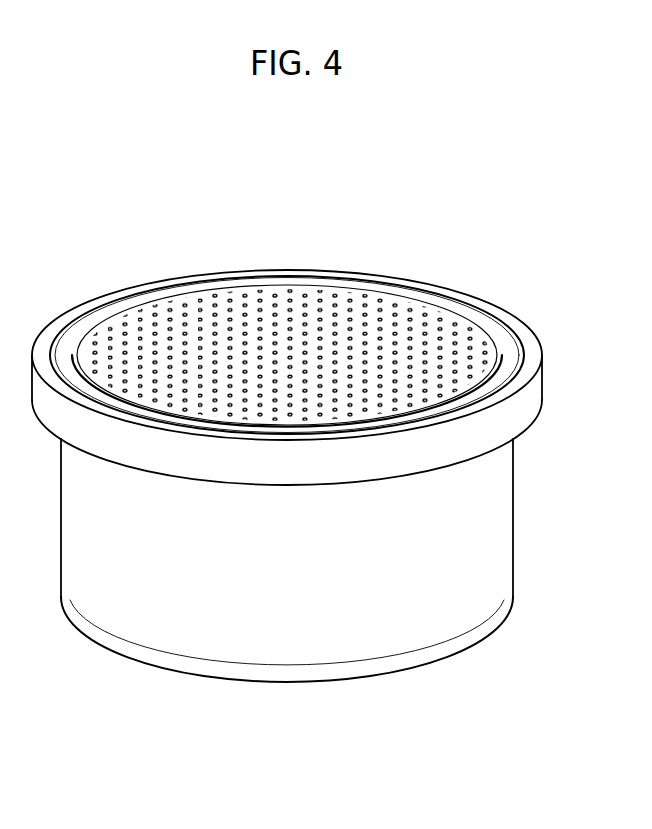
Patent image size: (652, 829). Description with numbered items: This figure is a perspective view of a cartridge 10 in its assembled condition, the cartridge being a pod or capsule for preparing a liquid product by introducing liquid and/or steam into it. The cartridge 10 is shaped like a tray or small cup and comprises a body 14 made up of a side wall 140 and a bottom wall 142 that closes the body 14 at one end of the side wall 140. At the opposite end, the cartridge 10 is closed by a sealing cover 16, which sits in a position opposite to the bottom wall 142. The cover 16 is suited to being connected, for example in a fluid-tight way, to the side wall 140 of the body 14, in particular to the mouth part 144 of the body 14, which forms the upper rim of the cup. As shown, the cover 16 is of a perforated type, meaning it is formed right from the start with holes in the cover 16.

The cartridge 10 is at (501, 222).
The body 14 is at (532, 549).
The side wall 140 is at (515, 492).
The bottom wall 142 is at (373, 690).
The mouth part 144 is at (552, 384).
The sealing cover 16 is at (176, 335).